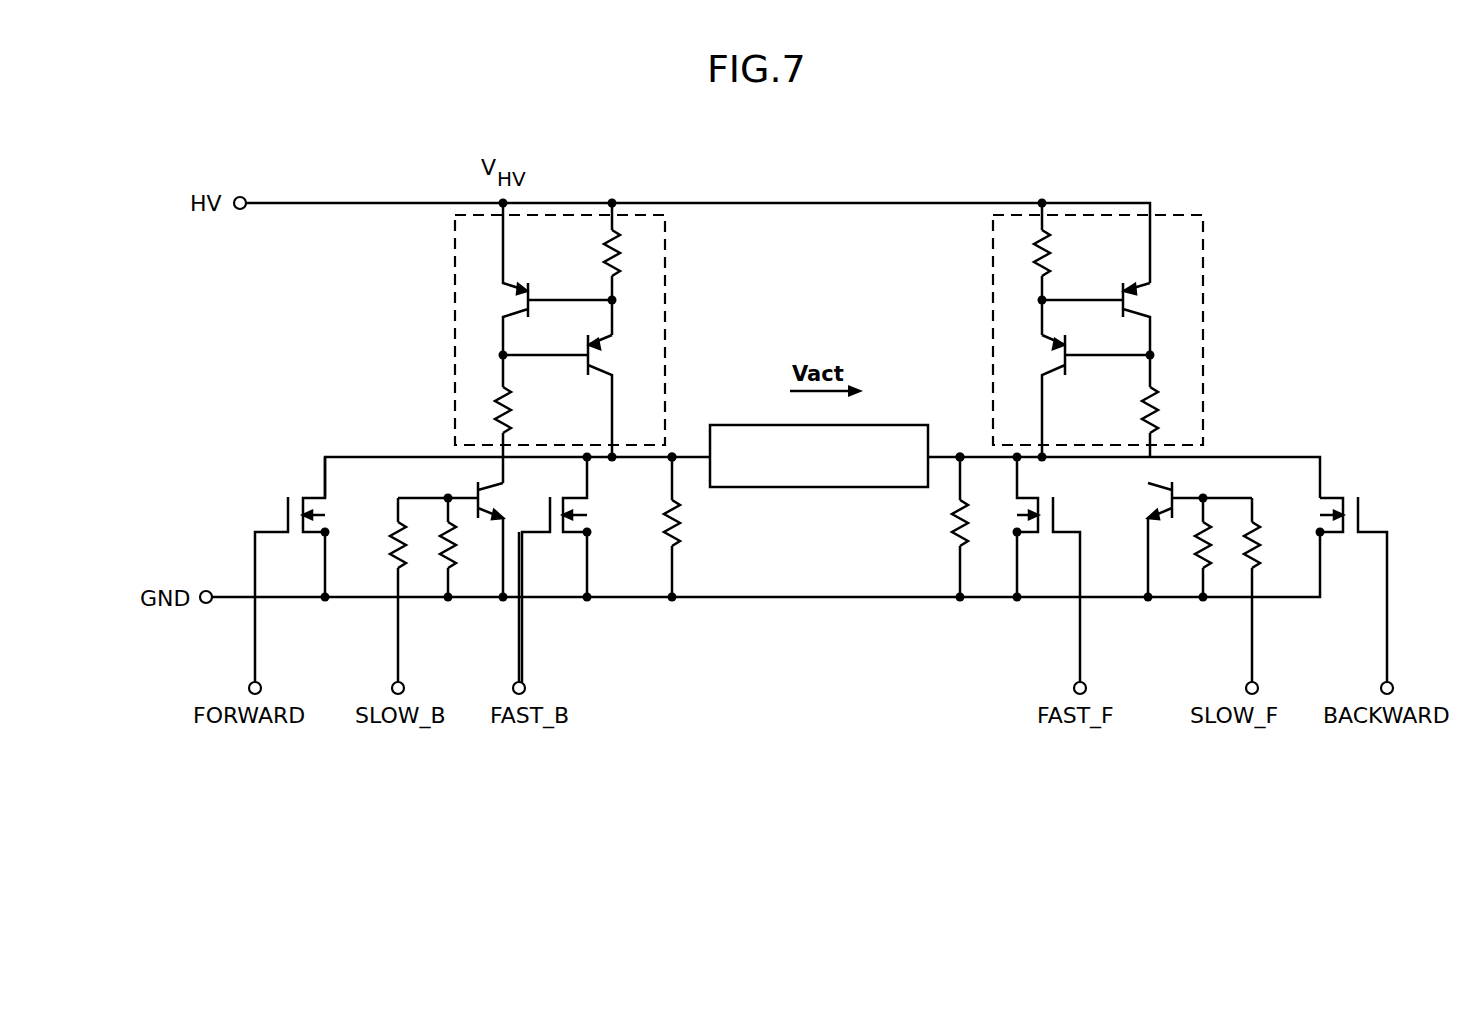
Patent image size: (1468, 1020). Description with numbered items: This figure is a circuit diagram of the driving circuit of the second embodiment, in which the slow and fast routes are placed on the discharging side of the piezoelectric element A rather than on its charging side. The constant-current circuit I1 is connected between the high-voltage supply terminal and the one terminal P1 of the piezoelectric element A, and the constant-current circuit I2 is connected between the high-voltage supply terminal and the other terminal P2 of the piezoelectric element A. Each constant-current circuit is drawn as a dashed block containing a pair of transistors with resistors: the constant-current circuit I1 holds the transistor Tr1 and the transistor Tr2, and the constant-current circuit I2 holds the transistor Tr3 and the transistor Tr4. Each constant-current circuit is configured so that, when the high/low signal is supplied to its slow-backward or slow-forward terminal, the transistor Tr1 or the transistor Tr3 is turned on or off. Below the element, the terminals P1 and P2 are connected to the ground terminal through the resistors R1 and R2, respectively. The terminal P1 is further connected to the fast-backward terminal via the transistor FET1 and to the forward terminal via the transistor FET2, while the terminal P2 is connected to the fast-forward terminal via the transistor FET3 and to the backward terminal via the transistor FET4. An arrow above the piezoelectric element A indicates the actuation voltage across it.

The transistor Tr1 is at (574, 396).
The transistor Tr2 is at (541, 279).
The transistor Tr3 is at (1080, 396).
The transistor Tr4 is at (1113, 319).
The transistor FET1 is at (572, 569).
The transistor FET2 is at (307, 569).
The transistor FET3 is at (1034, 569).
The transistor FET4 is at (1338, 584).
The resistor R1 is at (658, 527).
The resistor R2 is at (945, 527).
The constant-current circuit I1 is at (665, 297).
The constant-current circuit I2 is at (993, 298).
The terminal of the piezoelectric element P1 is at (672, 457).
The terminal of the piezoelectric element P2 is at (962, 457).
The piezoelectric element A is at (738, 425).